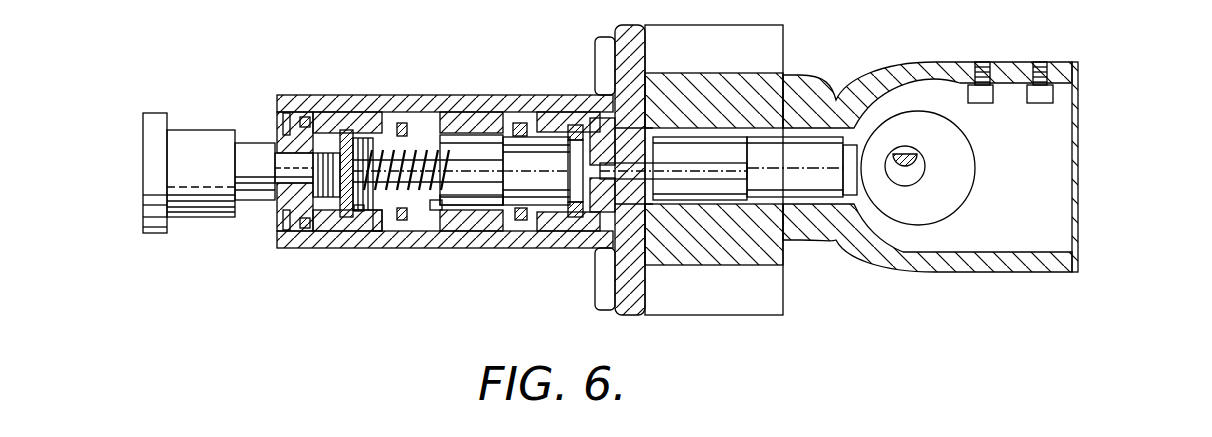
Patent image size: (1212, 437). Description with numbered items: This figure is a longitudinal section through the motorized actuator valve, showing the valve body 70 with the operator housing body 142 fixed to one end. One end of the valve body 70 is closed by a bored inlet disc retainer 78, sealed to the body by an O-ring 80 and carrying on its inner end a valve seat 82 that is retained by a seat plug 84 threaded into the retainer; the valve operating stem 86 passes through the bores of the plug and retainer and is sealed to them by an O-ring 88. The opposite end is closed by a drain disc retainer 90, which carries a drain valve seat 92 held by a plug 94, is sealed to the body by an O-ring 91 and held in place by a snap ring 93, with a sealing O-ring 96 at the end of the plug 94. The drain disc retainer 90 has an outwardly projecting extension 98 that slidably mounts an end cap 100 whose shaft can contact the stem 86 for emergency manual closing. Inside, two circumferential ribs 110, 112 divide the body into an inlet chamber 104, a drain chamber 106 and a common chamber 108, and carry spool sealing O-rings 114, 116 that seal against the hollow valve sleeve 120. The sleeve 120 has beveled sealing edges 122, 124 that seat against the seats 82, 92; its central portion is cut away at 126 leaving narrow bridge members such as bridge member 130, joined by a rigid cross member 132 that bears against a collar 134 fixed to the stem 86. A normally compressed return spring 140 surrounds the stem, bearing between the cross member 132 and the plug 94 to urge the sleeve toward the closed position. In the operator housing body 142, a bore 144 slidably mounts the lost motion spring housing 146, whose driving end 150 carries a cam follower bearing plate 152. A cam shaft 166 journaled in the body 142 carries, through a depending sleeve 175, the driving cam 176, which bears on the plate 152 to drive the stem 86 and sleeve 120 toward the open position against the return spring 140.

The valve body 70 is at (352, 96).
The inlet disc retainer 78 is at (650, 121).
The O-ring 80 is at (585, 126).
The valve seat 82 is at (580, 130).
The seat plug 84 is at (606, 195).
The valve operating stem 86 is at (660, 180).
The O-ring 88 is at (605, 141).
The drain disc retainer 90 is at (287, 111).
The O-ring 91 is at (305, 231).
The drain valve seat 92 is at (338, 135).
The snap ring 93 is at (300, 120).
The plug 94 is at (327, 205).
The sealing O-ring 96 is at (273, 168).
The extension 98 is at (243, 143).
The end cap 100 is at (180, 128).
The inlet chamber 104 is at (557, 112).
The drain chamber 106 is at (357, 114).
The common chamber 108 is at (477, 113).
The rib 110 is at (518, 214).
The rib 112 is at (378, 226).
The spool sealing O-ring 114 is at (508, 218).
The spool sealing O-ring 116 is at (402, 220).
The valve sleeve 120 is at (433, 133).
The sealing edge 122 is at (568, 224).
The sealing edge 124 is at (360, 211).
The cut-away portion 126 is at (438, 204).
The bridge member 130 is at (446, 150).
The cross member 132 is at (450, 200).
The collar 134 is at (498, 190).
The return spring 140 is at (380, 140).
The operator housing body 142 is at (783, 73).
The bore 144 is at (713, 200).
The lost motion spring housing 146 is at (786, 90).
The driving end 150 is at (848, 140).
The cam follower bearing plate 152 is at (845, 162).
The cam shaft 166 is at (898, 155).
The depending sleeve 175 is at (926, 167).
The driving cam 176 is at (955, 196).